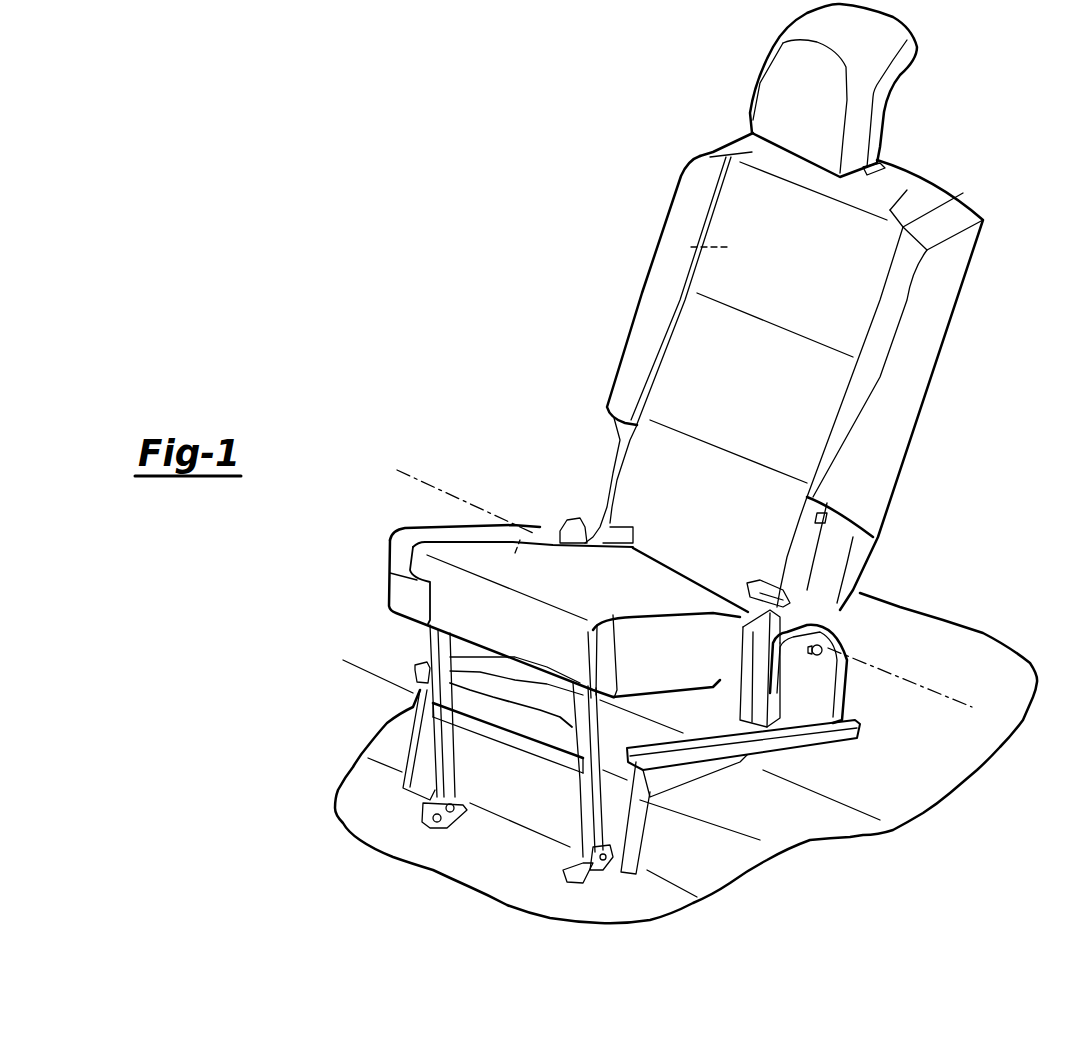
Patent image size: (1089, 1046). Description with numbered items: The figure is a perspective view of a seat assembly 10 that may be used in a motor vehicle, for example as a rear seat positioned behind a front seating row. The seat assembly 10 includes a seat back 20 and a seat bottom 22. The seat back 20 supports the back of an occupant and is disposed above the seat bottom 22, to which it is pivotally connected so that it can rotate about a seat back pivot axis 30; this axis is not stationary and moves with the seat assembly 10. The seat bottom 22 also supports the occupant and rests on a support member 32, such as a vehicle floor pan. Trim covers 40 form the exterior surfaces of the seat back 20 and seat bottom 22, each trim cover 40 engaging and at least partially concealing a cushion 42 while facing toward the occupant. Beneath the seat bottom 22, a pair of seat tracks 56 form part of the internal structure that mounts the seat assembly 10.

The seat assembly 10 is at (958, 150).
The seat back 20 is at (975, 268).
The seat bottom 22 is at (387, 557).
The seat back pivot axis 30 is at (938, 690).
The support member 32 is at (357, 773).
The trim cover 40 is at (667, 298).
The cushion 42 is at (727, 247).
The seat track 56 is at (420, 667).